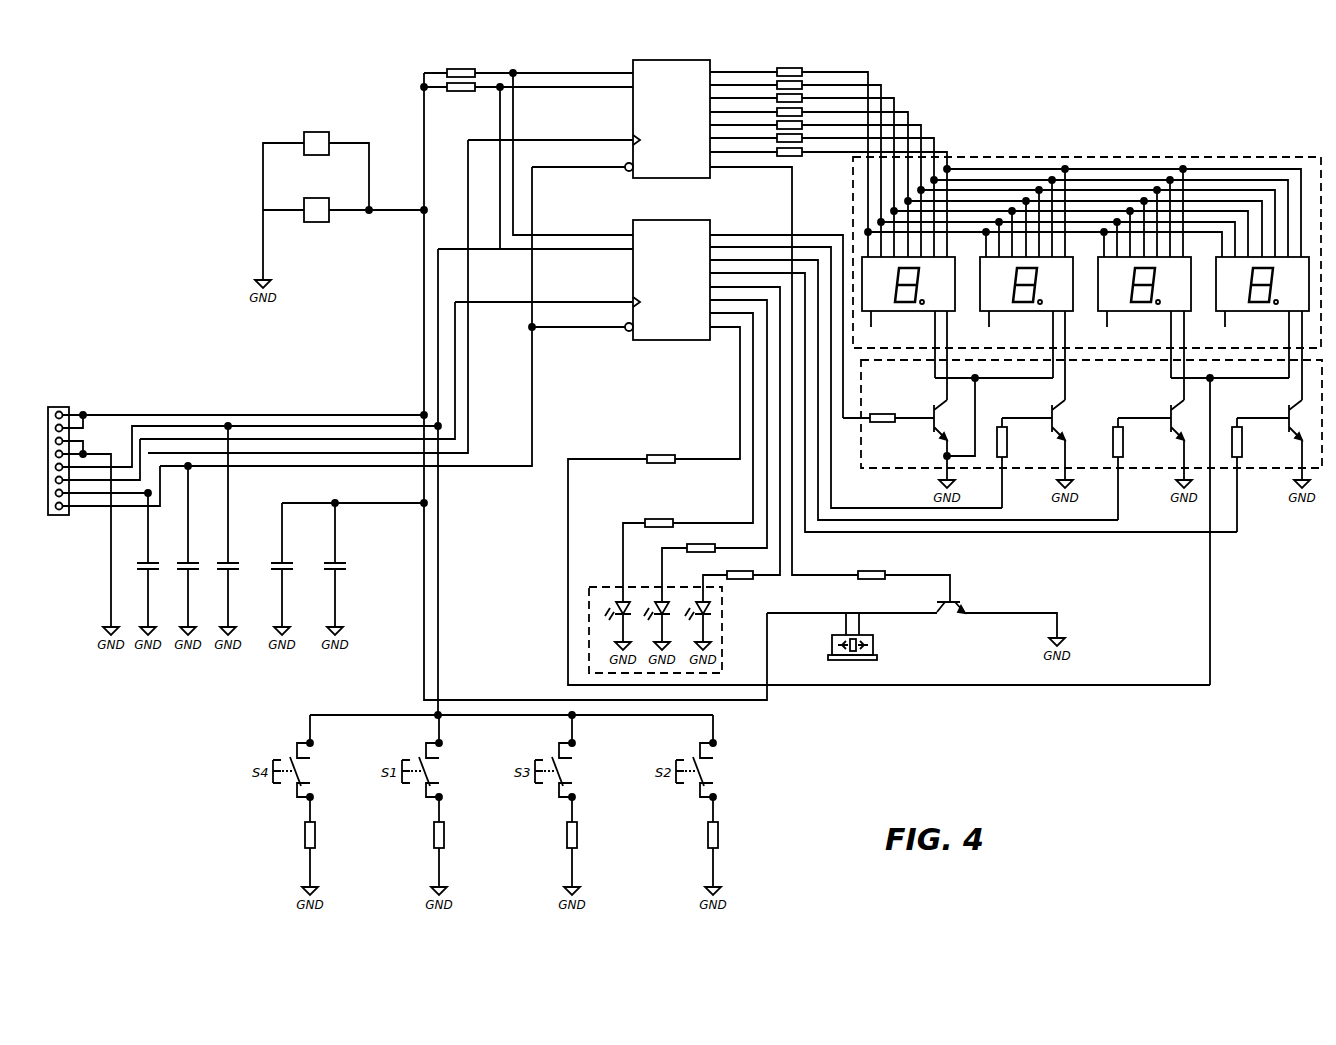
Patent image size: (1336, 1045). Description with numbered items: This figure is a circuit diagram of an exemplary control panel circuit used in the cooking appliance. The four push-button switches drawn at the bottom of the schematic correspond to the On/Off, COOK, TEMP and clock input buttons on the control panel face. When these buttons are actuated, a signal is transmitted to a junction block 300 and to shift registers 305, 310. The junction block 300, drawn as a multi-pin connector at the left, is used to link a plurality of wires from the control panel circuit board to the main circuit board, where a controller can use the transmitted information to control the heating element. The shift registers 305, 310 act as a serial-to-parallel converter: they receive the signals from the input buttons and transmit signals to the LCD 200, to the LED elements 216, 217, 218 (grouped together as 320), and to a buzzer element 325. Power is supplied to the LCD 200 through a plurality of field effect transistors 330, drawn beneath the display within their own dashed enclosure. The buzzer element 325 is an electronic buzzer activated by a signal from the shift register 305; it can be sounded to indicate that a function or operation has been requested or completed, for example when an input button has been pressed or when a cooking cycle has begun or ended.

The LCD 200 is at (1105, 157).
The junction block 300 is at (66, 407).
The shift register 305 is at (672, 178).
The shift register 310 is at (662, 340).
The LED element 216 is at (656, 603).
The LED element 217 is at (622, 598).
The LED element 218 is at (710, 606).
The LED element group 320 is at (631, 578).
The buzzer element 325 is at (875, 643).
The field effect transistors 330 is at (1272, 468).